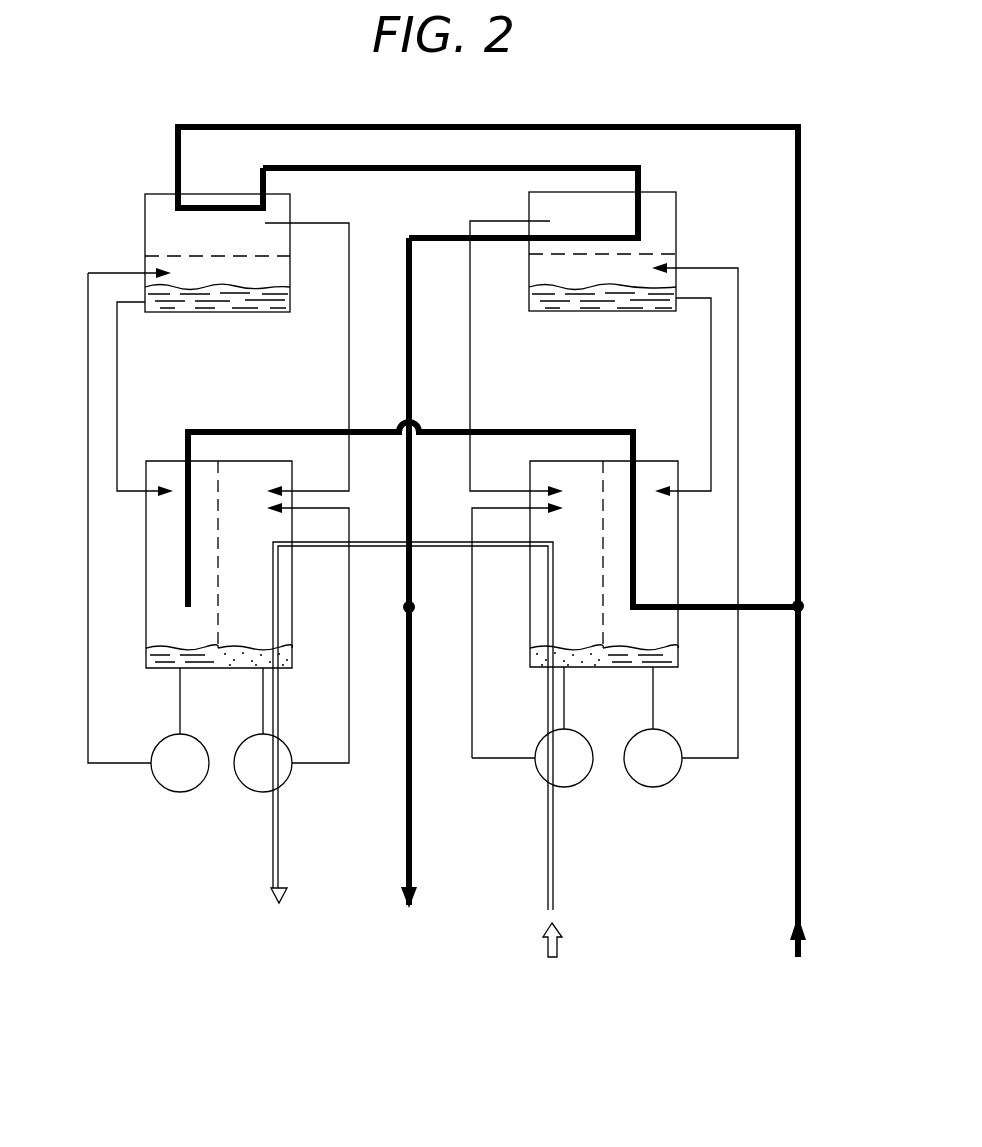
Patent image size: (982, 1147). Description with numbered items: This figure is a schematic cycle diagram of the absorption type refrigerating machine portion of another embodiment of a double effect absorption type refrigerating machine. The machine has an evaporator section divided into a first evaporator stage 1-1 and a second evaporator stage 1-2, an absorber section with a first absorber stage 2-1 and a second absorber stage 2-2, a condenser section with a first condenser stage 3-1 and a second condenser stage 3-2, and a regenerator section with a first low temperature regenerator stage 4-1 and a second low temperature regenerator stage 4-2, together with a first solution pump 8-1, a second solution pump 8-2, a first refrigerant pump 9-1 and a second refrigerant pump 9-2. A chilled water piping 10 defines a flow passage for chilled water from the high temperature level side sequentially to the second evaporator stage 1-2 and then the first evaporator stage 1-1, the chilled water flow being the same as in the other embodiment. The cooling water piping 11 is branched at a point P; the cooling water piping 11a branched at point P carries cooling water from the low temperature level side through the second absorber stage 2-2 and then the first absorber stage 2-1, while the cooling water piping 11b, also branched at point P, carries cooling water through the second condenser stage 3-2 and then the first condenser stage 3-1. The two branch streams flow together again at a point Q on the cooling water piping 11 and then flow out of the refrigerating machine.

The cooling water piping 11 is at (413, 815).
The cooling water piping 11a is at (273, 428).
The cooling water piping 11b is at (393, 172).
The first condenser stage 3-1 is at (668, 218).
The second condenser stage 3-2 is at (163, 216).
The first low temperature regenerator stage 4-1 is at (606, 300).
The second low temperature regenerator stage 4-2 is at (210, 312).
The first evaporator stage 1-1 is at (287, 627).
The first absorber stage 2-1 is at (160, 615).
The second evaporator stage 1-2 is at (535, 612).
The second absorber stage 2-2 is at (665, 618).
The first solution pump 8-1 is at (172, 793).
The first refrigerant pump 9-1 is at (258, 793).
The second solution pump 8-2 is at (665, 790).
The second refrigerant pump 9-2 is at (575, 790).
The chilled water piping 10 is at (555, 875).
The point Q is at (404, 612).
The point P is at (803, 610).